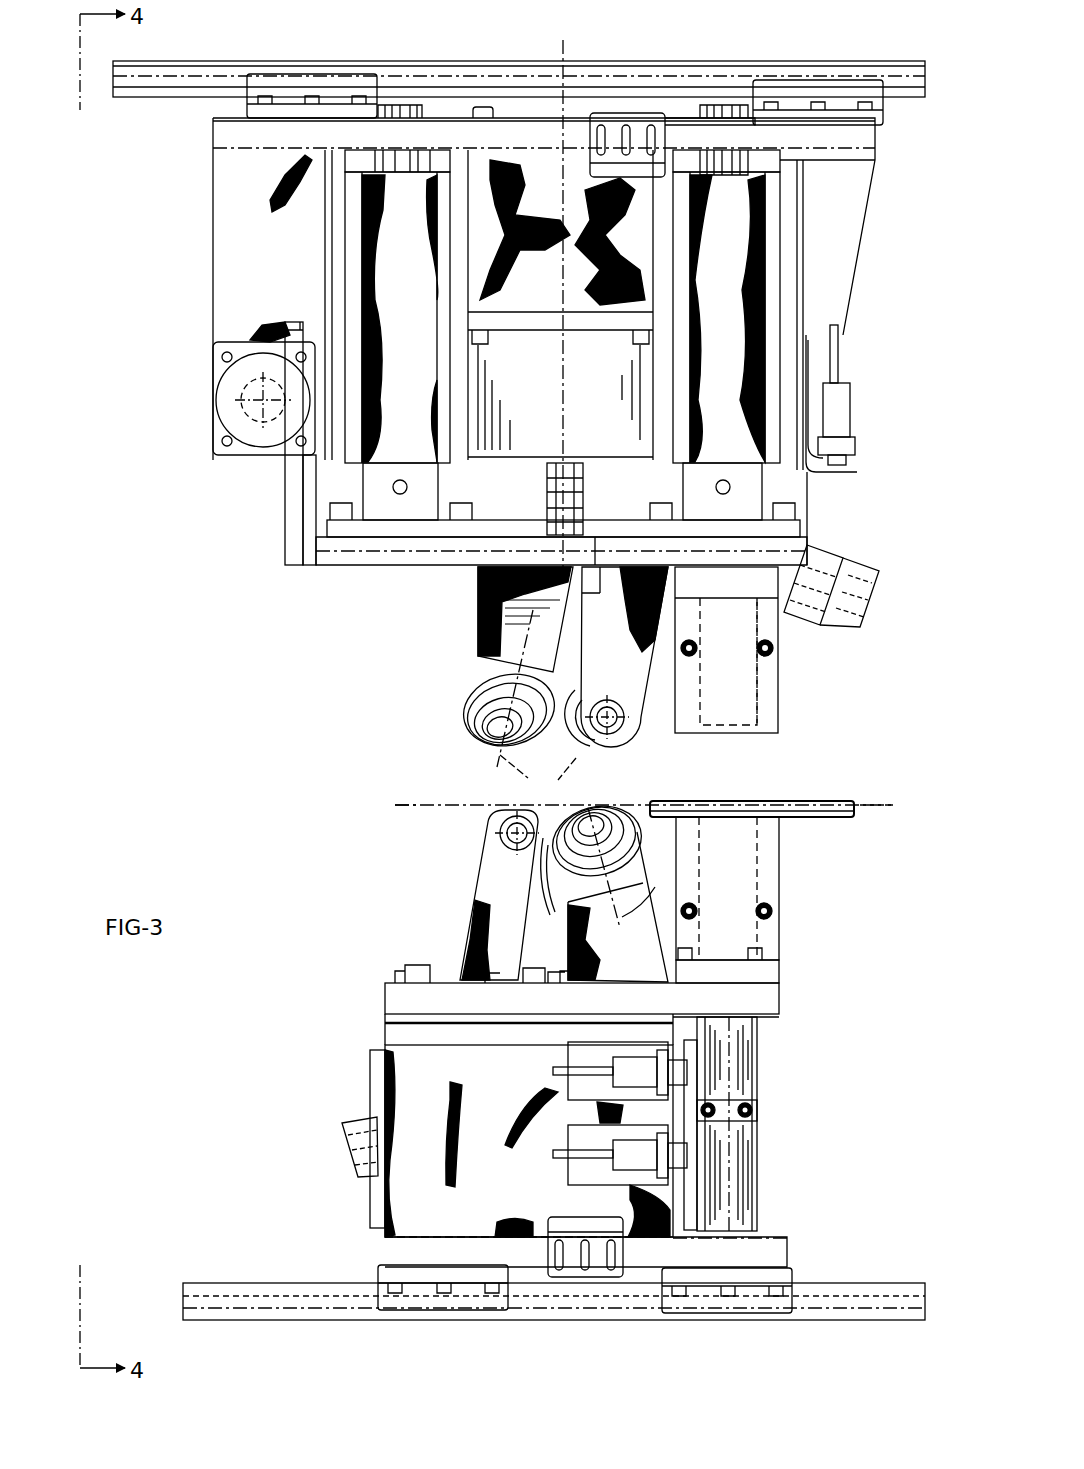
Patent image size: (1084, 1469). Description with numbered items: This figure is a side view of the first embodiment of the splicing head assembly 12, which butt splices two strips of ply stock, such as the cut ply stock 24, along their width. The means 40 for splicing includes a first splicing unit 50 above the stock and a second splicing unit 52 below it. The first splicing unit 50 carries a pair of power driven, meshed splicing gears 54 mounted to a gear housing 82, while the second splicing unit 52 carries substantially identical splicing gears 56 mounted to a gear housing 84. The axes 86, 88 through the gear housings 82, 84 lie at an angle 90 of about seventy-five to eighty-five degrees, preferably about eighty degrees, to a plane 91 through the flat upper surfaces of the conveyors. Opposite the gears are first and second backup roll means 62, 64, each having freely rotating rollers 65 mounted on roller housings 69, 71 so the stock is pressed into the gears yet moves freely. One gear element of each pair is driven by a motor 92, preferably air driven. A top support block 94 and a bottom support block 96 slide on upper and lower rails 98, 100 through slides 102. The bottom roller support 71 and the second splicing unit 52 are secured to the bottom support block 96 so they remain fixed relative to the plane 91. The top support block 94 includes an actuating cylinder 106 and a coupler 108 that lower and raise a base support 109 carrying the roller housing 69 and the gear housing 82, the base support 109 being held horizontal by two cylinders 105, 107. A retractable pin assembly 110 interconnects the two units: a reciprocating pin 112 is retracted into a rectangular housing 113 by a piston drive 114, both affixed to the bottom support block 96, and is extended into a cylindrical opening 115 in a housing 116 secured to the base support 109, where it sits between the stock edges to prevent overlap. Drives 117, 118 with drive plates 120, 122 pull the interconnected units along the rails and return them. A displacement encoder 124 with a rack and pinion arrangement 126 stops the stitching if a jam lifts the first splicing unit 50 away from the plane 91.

The splicing head assembly 12 is at (808, 700).
The cut ply stock 24 is at (848, 800).
The means for splicing 40 is at (413, 780).
The first splicing unit 50 is at (470, 735).
The second splicing unit 52 is at (632, 795).
The splicing gears 54 is at (476, 720).
The splicing gears 56 is at (640, 835).
The first backup roll means 62 is at (648, 730).
The second backup roll means 64 is at (465, 858).
The rollers 65 is at (562, 811).
The roller housing 69 is at (624, 657).
The roller housing 71 is at (499, 895).
The gear housing 82 is at (478, 668).
The gear housing 84 is at (618, 907).
The axis 86 is at (527, 625).
The axis 88 is at (632, 908).
The angle 90 is at (535, 793).
The plane 91 is at (403, 808).
The motor 92 is at (850, 572).
The top support block 94 is at (872, 318).
The bottom support block 96 is at (340, 1082).
The upper rail 98 is at (178, 96).
The lower rail 100 is at (288, 1282).
The slides 102 is at (312, 78).
The cylinder 105 is at (397, 306).
The actuating cylinder 106 is at (560, 305).
The cylinder 107 is at (726, 306).
The coupler 108 is at (590, 515).
The base support 109 is at (378, 552).
The retractable pin assembly 110 is at (807, 900).
The reciprocating pin 112 is at (737, 922).
The rectangular housing 113 is at (770, 850).
The piston drive 114 is at (760, 1075).
The cylindrical opening 115 is at (757, 700).
The housing 116 is at (772, 672).
The drive 117 is at (640, 112).
The drive 118 is at (594, 1286).
The drive plate 120 is at (617, 110).
The drive plate 122 is at (567, 1267).
The displacement encoder 124 is at (204, 393).
The rack and pinion arrangement 126 is at (285, 513).